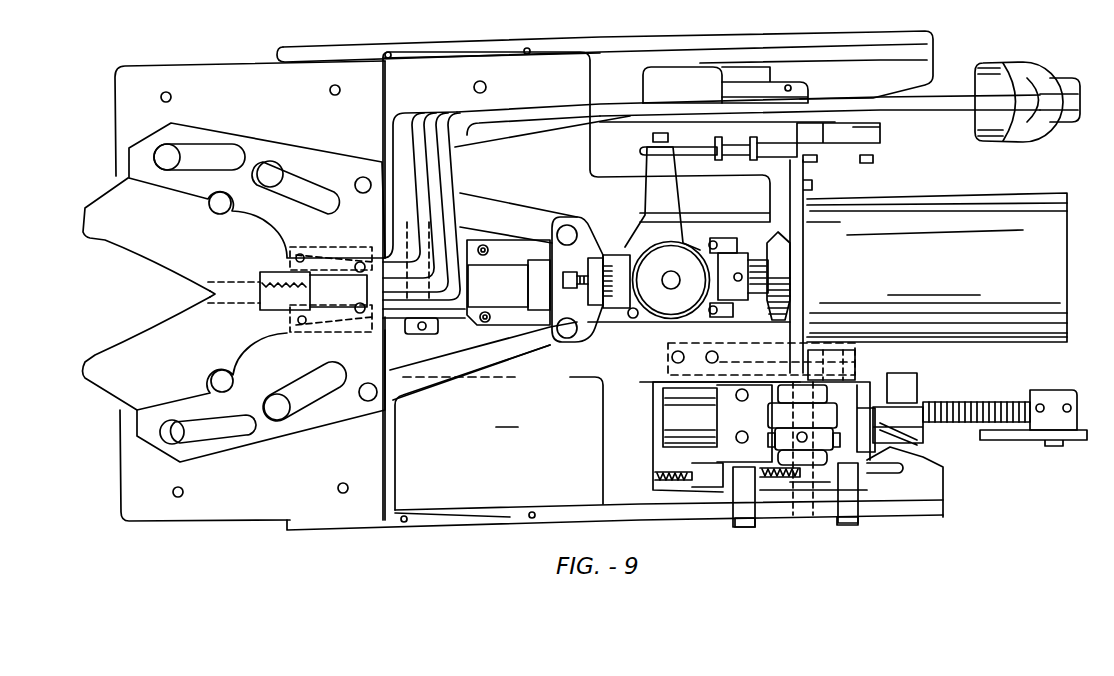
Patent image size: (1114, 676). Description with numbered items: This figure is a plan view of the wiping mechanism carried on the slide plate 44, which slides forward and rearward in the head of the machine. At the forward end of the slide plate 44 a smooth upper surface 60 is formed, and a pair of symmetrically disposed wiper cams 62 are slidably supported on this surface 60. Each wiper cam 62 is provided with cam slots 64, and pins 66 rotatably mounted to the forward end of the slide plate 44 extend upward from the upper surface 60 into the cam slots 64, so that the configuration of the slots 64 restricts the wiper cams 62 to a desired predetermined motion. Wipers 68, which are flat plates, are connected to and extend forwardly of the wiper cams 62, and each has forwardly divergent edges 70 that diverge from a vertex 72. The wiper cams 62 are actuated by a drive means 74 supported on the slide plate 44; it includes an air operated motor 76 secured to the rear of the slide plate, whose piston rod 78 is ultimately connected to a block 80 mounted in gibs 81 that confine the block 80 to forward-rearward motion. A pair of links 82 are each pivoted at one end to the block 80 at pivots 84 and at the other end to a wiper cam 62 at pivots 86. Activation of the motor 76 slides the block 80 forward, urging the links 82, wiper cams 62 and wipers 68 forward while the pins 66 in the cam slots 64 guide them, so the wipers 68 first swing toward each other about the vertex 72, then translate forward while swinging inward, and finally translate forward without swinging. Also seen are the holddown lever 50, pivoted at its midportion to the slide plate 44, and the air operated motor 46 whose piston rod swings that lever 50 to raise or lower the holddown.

The slide plate 44 is at (610, 280).
The air operated motor 46 is at (993, 65).
The holddown lever 50 is at (428, 127).
The upper surface 60 is at (228, 78).
The wiper cams 62 is at (335, 162).
The cam slots 64 is at (292, 197).
The pins 66 is at (168, 156).
The wipers 68 is at (160, 380).
The forwardly divergent edges 70 is at (110, 243).
The vertex 72 is at (207, 293).
The drive means 74 is at (735, 325).
The air operated motor 76 is at (1000, 205).
The piston rod 78 is at (757, 262).
The block 80 is at (567, 255).
The gibs 81 is at (490, 258).
The links 82 is at (525, 218).
The pivots 84 is at (572, 230).
The pivots 86 is at (368, 387).